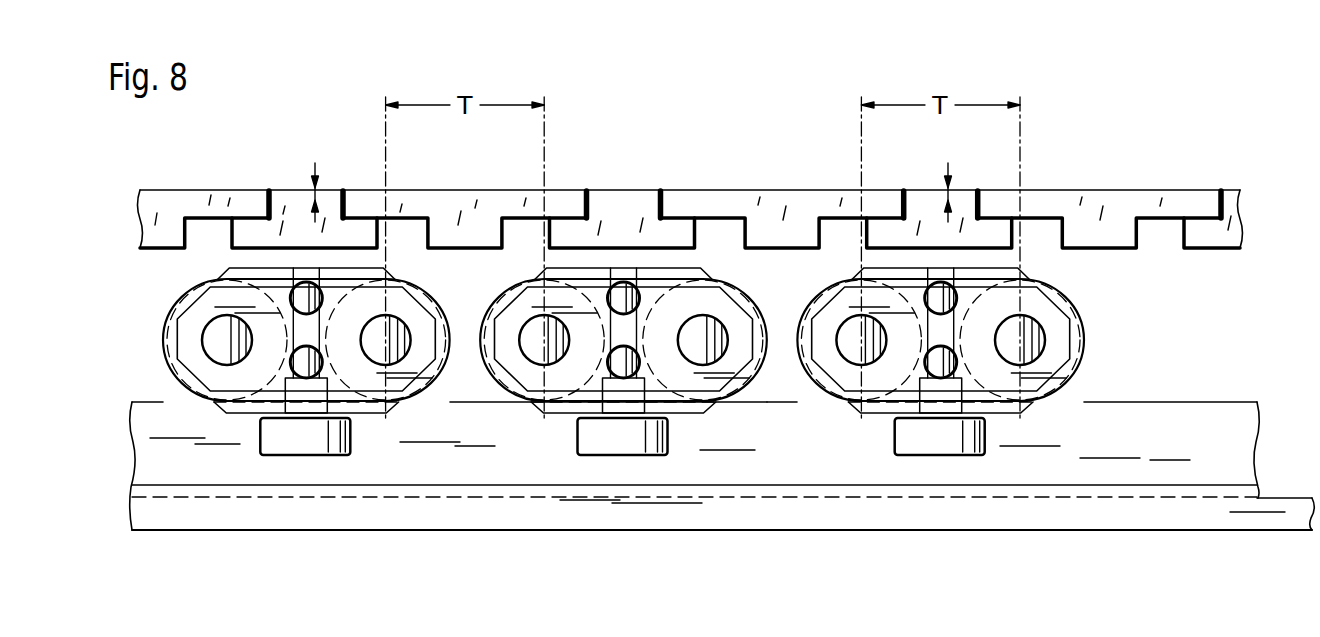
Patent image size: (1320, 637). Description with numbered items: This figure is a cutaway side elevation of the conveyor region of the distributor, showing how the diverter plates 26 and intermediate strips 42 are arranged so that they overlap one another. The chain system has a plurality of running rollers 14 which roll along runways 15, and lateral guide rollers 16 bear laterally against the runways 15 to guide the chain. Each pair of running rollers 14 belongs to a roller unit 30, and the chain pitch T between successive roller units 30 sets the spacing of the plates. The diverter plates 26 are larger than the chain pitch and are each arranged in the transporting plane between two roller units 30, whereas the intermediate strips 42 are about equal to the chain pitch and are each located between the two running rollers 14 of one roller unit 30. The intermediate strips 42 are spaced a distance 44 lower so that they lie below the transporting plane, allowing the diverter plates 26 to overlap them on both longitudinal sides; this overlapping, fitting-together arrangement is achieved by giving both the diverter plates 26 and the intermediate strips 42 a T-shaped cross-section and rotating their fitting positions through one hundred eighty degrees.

The running rollers 14 is at (803, 322).
The runways 15 is at (1107, 412).
The lateral guide rollers 16 is at (650, 436).
The diverter plates 26 is at (470, 207).
The roller unit 30 is at (222, 278).
The intermediate strips 42 is at (283, 207).
The distance 44 is at (311, 193).